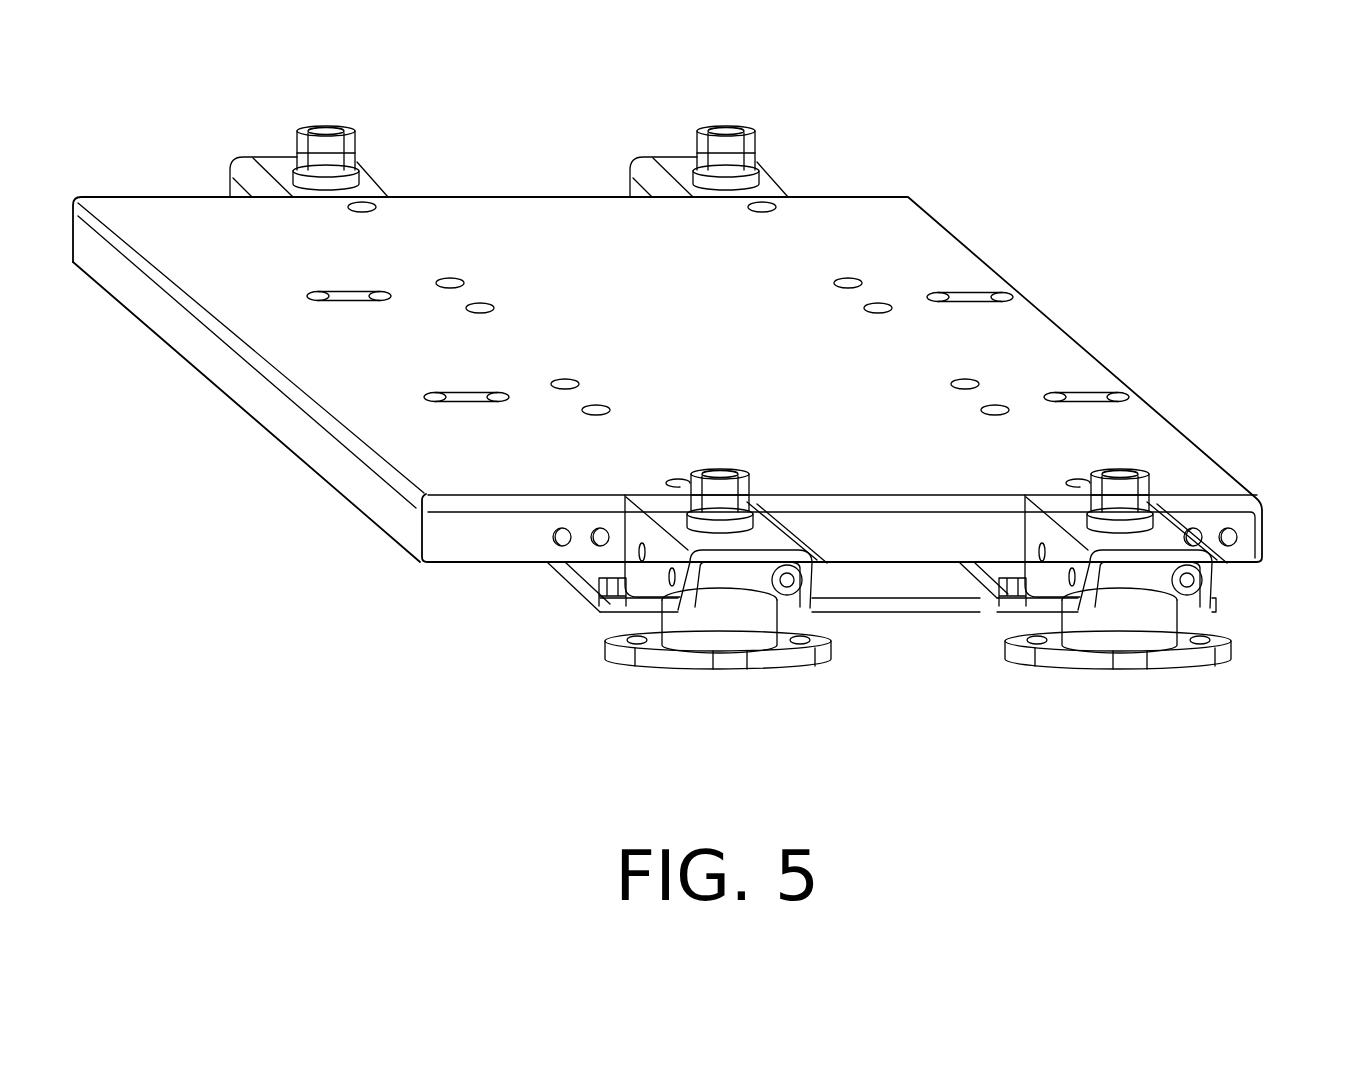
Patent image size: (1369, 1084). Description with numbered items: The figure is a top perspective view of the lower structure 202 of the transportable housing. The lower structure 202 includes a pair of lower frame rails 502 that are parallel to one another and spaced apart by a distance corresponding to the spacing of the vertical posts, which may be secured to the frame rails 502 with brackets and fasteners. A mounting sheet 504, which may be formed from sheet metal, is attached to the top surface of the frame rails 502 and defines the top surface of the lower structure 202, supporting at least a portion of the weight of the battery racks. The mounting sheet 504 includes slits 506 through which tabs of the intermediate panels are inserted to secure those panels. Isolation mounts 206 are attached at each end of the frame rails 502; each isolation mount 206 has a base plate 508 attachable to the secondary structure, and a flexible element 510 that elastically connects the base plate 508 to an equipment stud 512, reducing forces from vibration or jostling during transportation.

The lower structure 202 is at (658, 331).
The isolation mount 206 is at (1261, 609).
The lower frame rail 502 is at (252, 157).
The mounting sheet 504 is at (140, 207).
The slit 506 is at (307, 295).
The base plate 508 is at (613, 662).
The flexible element 510 is at (747, 630).
The equipment stud 512 is at (765, 582).